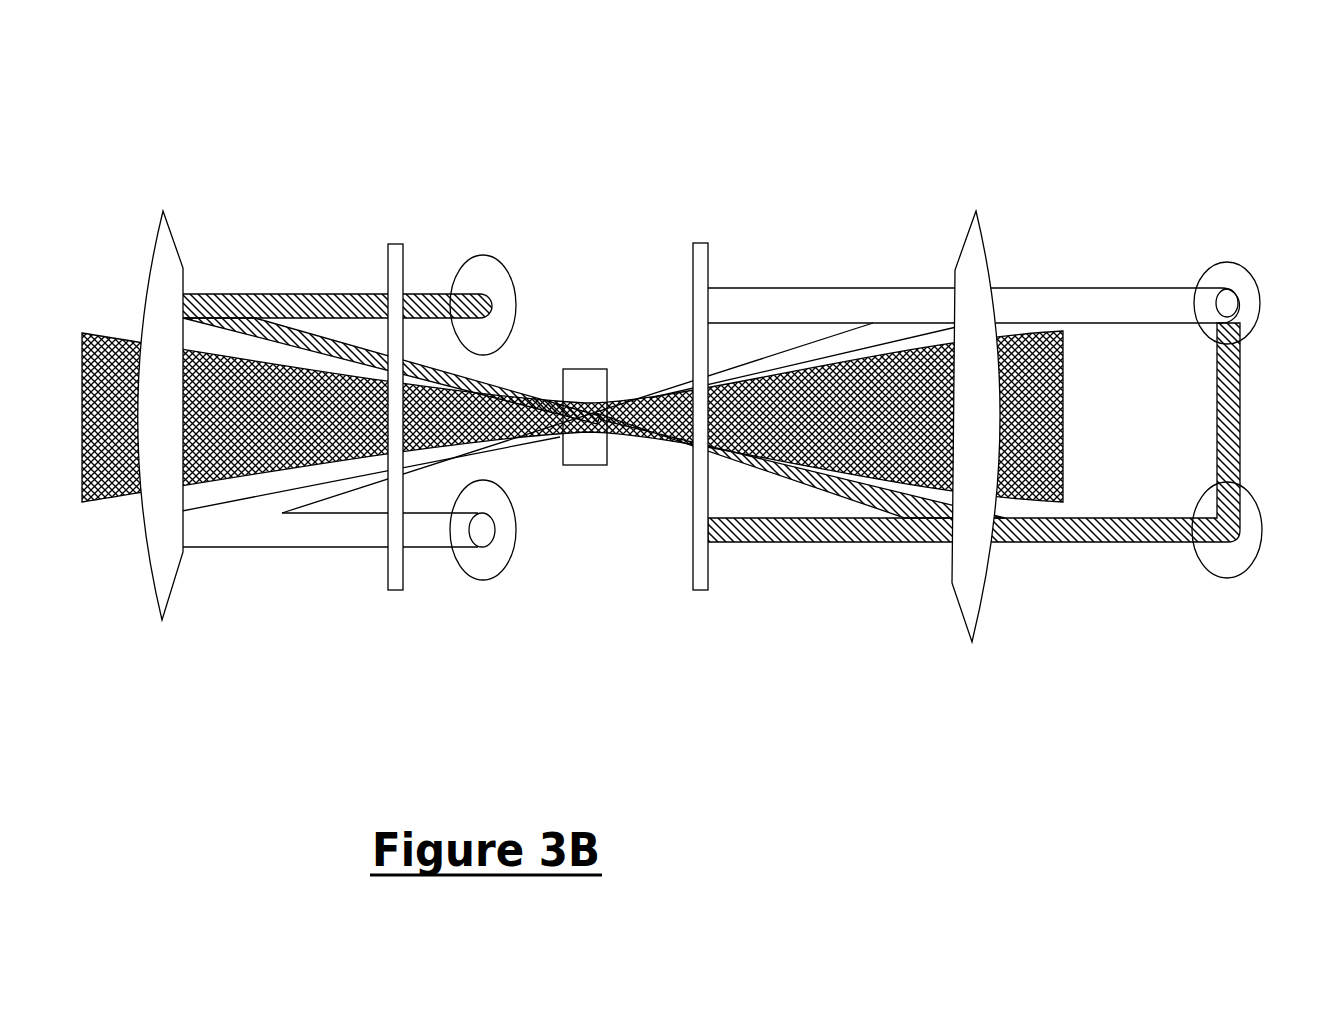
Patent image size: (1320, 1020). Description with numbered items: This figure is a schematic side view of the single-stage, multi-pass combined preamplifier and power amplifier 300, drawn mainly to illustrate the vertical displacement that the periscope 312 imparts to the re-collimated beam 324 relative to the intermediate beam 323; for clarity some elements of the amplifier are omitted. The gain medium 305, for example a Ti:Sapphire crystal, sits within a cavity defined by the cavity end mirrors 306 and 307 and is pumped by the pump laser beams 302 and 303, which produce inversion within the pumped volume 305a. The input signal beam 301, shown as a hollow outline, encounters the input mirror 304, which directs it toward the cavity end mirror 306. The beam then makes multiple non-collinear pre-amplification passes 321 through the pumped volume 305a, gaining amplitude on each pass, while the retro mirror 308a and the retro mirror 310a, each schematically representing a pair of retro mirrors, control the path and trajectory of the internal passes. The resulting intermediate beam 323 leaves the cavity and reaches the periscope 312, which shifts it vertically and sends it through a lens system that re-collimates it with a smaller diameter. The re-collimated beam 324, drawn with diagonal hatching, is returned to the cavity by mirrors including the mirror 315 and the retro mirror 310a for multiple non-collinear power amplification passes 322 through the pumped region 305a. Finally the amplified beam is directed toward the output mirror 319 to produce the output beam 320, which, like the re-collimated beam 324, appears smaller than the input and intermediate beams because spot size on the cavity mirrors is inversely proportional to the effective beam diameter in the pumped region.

The single-stage, multi-pass combined preamplifier and power amplifier 300 is at (424, 83).
The input signal beam 301 is at (497, 530).
The pump laser beam 302 is at (131, 426).
The pump laser beam 303 is at (1055, 427).
The input mirror 304 is at (505, 567).
The gain medium 305 is at (627, 351).
The pumped volume 305a is at (592, 403).
The cavity end mirror 306 is at (153, 573).
The cavity end mirror 307 is at (962, 265).
The retro mirror 308a is at (390, 593).
The retro mirror 310a is at (700, 592).
The periscope 312 is at (1245, 264).
The mirror 315 is at (1242, 577).
The output mirror 319 is at (503, 267).
The output beam 320 is at (480, 292).
The pre-amplification passes 321 is at (497, 450).
The power amplification passes 322 is at (678, 452).
The intermediate beam 323 is at (1095, 288).
The re-collimated beam 324 is at (1103, 517).